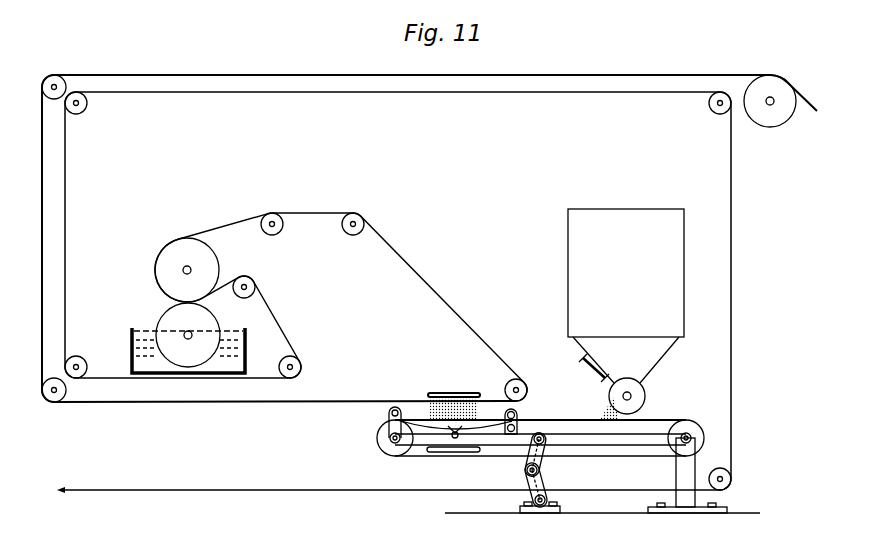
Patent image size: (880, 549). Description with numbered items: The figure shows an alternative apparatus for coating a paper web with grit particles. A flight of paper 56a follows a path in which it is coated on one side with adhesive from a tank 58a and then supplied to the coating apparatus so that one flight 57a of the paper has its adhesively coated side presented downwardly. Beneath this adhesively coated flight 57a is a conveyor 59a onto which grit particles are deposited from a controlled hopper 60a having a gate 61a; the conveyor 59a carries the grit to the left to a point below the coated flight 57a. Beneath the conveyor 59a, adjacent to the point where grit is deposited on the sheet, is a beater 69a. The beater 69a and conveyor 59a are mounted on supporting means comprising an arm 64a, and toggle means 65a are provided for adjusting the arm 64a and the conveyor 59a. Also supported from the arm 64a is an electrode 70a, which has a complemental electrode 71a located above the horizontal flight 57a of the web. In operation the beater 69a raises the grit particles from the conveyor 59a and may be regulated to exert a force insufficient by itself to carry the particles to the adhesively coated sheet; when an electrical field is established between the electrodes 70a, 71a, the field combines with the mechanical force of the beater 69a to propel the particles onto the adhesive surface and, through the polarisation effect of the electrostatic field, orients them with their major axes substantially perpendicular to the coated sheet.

The paper 56a is at (66, 268).
The flight 57a is at (329, 398).
The tank 58a is at (133, 347).
The conveyor 59a is at (552, 418).
The controlled hopper 60a is at (626, 296).
The gate 61a is at (610, 380).
The arm 64a is at (632, 446).
The toggle means 65a is at (540, 484).
The beater 69a is at (458, 438).
The electrode 70a is at (427, 451).
The complemental electrode 71a is at (452, 392).